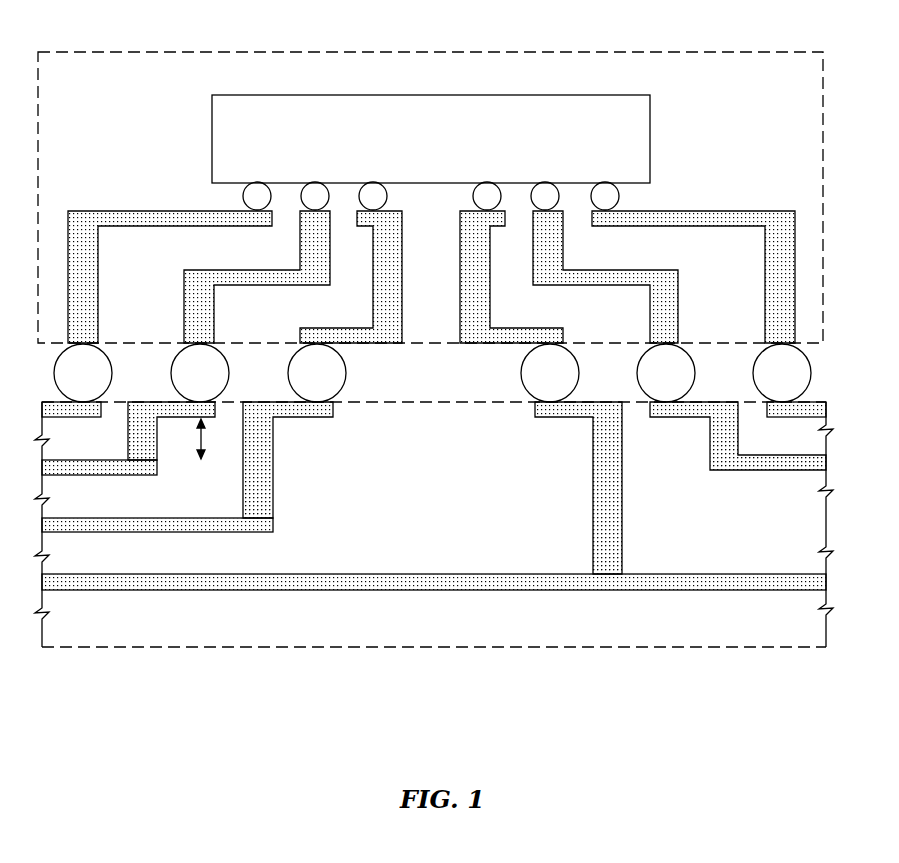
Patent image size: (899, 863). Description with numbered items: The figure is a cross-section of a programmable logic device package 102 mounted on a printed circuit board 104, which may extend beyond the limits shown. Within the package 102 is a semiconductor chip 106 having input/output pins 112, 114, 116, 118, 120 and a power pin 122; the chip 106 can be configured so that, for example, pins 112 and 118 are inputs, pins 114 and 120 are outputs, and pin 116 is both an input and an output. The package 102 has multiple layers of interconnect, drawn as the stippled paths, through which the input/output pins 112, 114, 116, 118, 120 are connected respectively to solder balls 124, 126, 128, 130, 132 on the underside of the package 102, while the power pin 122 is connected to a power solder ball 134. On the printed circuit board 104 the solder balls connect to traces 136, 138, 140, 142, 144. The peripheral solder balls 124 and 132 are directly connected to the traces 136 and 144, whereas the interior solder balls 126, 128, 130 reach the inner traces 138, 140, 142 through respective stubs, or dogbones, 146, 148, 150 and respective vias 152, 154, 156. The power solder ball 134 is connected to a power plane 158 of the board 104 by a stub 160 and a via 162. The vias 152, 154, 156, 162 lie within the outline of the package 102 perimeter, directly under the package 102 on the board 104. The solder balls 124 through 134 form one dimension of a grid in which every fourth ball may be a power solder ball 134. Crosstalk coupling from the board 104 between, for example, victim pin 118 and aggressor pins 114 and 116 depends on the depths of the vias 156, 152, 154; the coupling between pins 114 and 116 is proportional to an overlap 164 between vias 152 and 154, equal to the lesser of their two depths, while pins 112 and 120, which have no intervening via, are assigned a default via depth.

The programmable logic device package 102 is at (64, 52).
The printed circuit board 104 is at (70, 649).
The semiconductor chip 106 is at (240, 95).
The input/output pin 112 is at (243, 196).
The input/output pin 114 is at (325, 206).
The input/output pin 116 is at (386, 200).
The input/output pin 118 is at (555, 206).
The input/output pin 120 is at (619, 196).
The power pin 122 is at (497, 206).
The solder ball 124 is at (106, 390).
The solder ball 126 is at (223, 390).
The solder ball 128 is at (340, 390).
The solder ball 130 is at (644, 389).
The solder ball 132 is at (760, 389).
The power solder ball 134 is at (528, 389).
The trace 136 is at (57, 417).
The inner trace 138 is at (101, 476).
The inner trace 140 is at (160, 532).
The inner trace 142 is at (763, 471).
The trace 144 is at (783, 417).
The stub 146 is at (127, 410).
The stub 148 is at (300, 417).
The stub 150 is at (679, 417).
The via 152 is at (157, 452).
The via 154 is at (274, 477).
The via 156 is at (710, 445).
The power plane 158 is at (447, 574).
The stub 160 is at (565, 417).
The via 162 is at (593, 514).
The overlap 164 is at (204, 440).